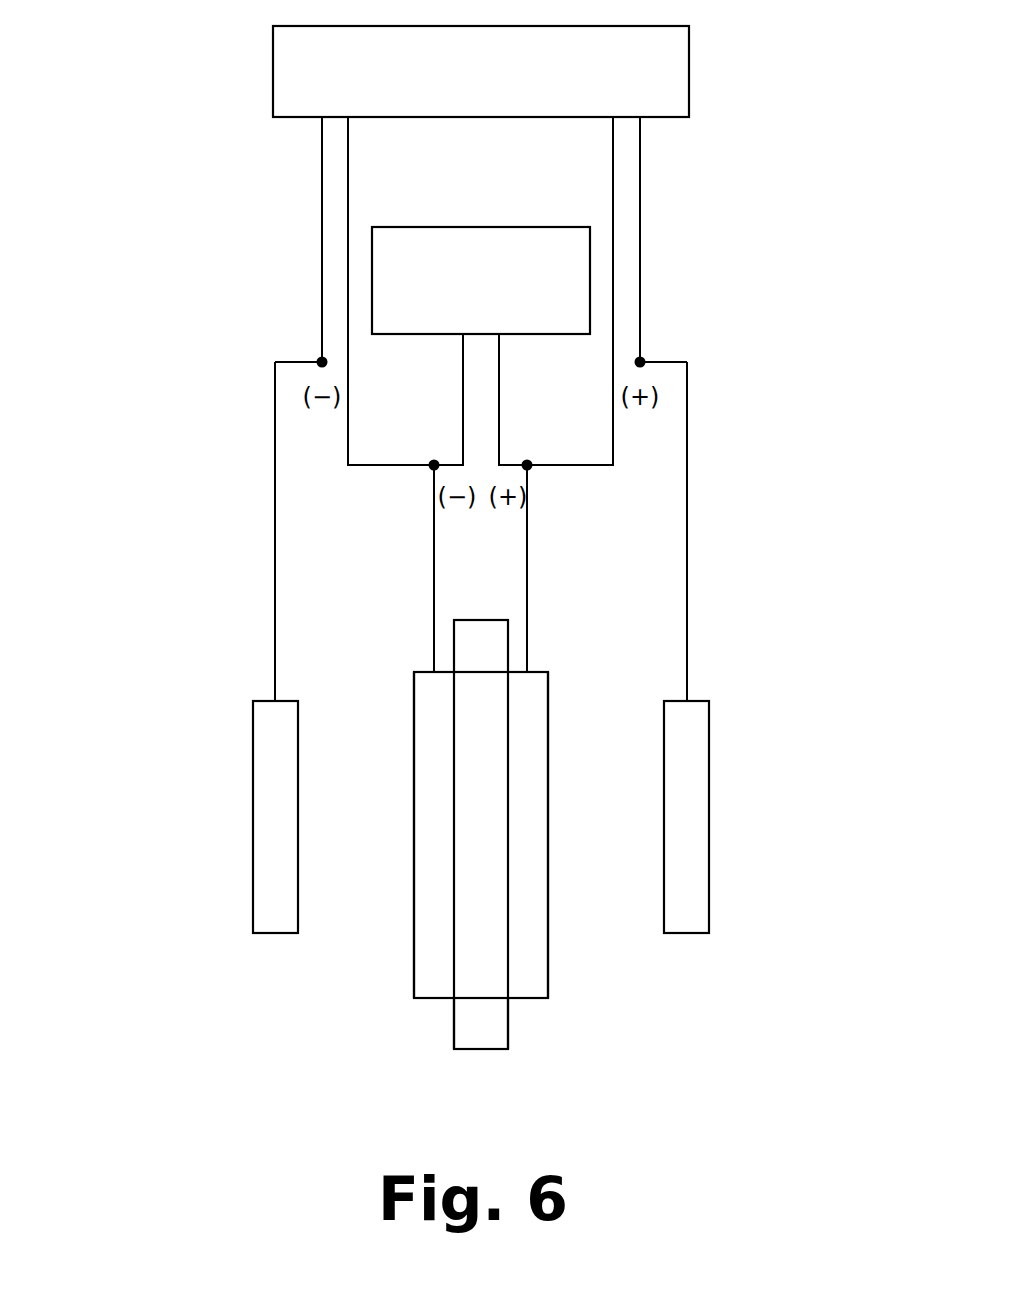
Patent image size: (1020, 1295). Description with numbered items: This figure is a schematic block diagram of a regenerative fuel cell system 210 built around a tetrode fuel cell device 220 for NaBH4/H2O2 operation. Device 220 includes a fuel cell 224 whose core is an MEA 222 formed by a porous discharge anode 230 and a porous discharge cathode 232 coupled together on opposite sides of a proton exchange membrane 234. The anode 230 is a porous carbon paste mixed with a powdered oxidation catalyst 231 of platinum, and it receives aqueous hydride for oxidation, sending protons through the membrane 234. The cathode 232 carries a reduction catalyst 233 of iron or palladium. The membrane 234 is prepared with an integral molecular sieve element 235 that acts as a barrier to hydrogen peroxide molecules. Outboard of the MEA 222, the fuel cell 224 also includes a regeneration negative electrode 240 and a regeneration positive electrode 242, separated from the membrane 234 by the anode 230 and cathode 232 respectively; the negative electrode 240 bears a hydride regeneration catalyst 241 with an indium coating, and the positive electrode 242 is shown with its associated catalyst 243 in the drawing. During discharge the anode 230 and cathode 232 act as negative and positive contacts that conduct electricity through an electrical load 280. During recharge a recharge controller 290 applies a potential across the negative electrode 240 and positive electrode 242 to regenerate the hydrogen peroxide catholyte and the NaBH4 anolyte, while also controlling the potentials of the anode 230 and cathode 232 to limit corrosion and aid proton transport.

The fuel cell system 210 is at (822, 118).
The tetrode fuel cell device 220 is at (190, 338).
The MEA 222 is at (552, 669).
The fuel cell 224 is at (772, 340).
The porous discharge anode 230 is at (426, 921).
The oxidation catalyst 231 is at (428, 986).
The porous discharge cathode 232 is at (537, 921).
The reduction catalyst 233 is at (534, 986).
The proton exchange membrane 234 is at (461, 1024).
The integral molecular sieve element 235 is at (501, 1024).
The regeneration negative electrode 240 is at (268, 742).
The hydride regeneration catalyst 241 is at (268, 862).
The regeneration positive electrode 242 is at (692, 744).
The second auxiliary electrode lower portion 243 is at (692, 865).
The electrical load 280 is at (481, 280).
The recharge controller 290 is at (481, 71).